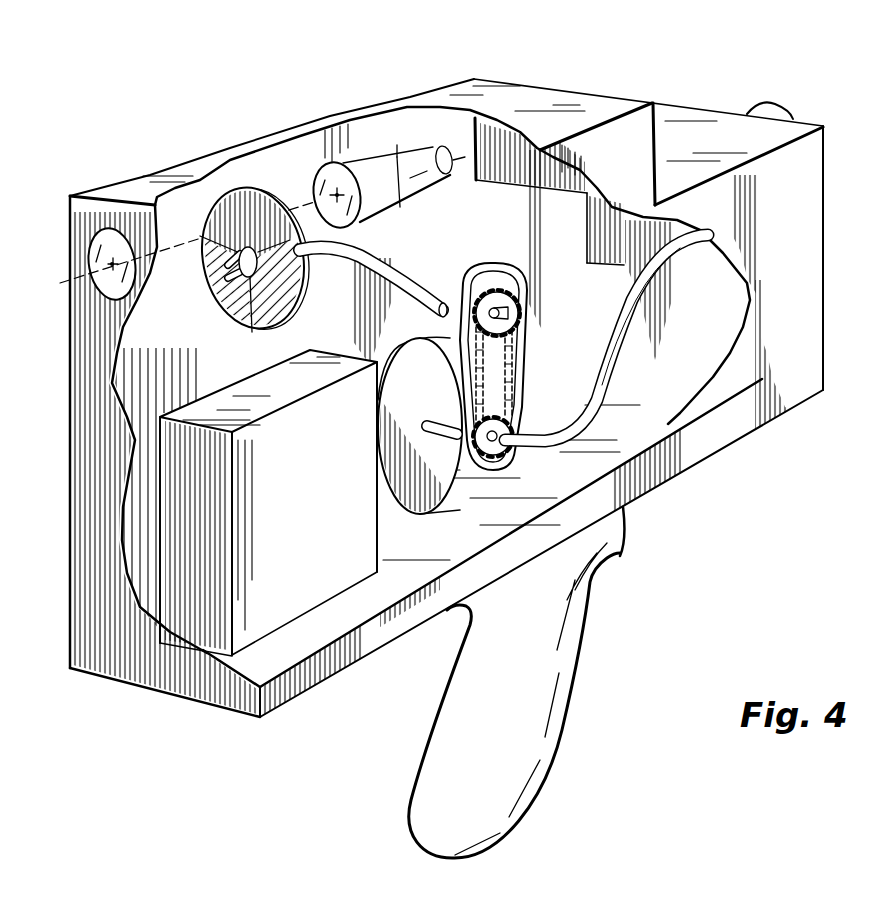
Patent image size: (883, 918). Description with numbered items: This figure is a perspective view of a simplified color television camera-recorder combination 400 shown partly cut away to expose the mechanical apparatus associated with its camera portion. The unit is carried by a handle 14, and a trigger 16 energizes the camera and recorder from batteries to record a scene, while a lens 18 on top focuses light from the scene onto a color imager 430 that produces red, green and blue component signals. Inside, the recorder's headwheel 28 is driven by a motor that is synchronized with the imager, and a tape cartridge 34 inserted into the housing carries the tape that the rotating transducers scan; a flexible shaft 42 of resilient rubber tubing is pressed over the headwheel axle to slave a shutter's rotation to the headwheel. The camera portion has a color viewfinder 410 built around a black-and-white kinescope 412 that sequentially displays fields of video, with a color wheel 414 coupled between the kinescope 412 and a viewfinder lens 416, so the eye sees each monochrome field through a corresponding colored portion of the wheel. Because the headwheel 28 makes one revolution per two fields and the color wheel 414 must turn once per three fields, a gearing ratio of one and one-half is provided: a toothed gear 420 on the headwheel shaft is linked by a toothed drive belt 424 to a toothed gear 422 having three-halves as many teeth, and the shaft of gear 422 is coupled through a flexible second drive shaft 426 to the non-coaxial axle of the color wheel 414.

The color television camera-recorder combination 400 is at (757, 500).
The color viewfinder 410 is at (203, 142).
The black-and-white kinescope 412 is at (370, 167).
The color wheel 414 is at (237, 310).
The viewfinder lens 416 is at (138, 282).
The toothed gear 420 is at (504, 452).
The toothed gear 422 is at (513, 293).
The toothed drive belt 424 is at (512, 350).
The second drive shaft 426 is at (410, 283).
The color imager 430 is at (592, 222).
The flexible shaft 42 is at (598, 356).
The headwheel 28 is at (468, 466).
The tape cartridge 34 is at (208, 655).
The handle 14 is at (568, 684).
The trigger 16 is at (622, 550).
The lens 18 is at (790, 112).